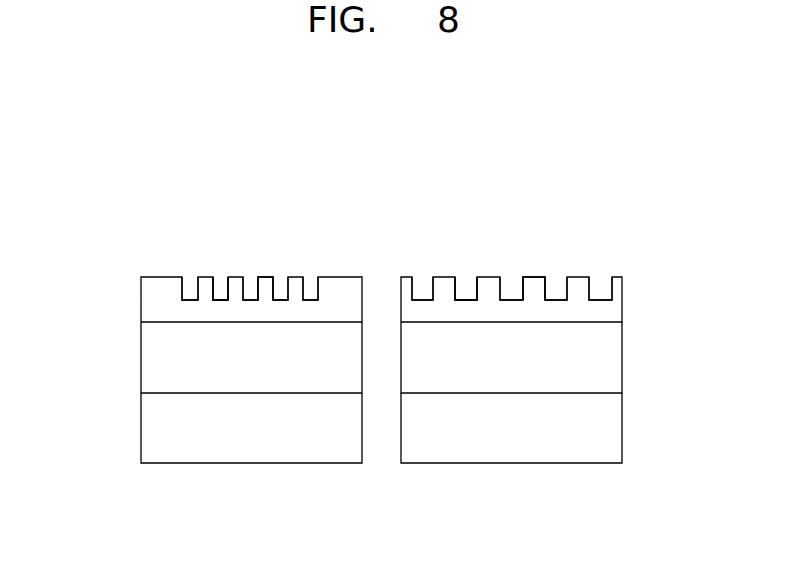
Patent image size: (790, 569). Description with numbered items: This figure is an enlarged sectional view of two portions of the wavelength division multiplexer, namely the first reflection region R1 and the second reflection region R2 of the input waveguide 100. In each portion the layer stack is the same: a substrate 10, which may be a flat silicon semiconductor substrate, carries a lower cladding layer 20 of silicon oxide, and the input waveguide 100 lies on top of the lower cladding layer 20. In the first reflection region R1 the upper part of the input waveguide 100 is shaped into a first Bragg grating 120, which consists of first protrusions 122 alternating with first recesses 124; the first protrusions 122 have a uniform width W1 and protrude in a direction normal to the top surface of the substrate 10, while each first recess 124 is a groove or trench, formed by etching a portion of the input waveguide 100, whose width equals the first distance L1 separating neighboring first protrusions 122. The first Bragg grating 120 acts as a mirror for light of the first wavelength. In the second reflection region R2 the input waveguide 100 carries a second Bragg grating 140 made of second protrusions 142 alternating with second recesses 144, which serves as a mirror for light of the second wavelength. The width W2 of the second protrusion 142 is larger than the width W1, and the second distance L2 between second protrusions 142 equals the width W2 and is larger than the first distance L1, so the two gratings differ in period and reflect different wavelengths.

The substrate 10 is at (150, 430).
The lower cladding layer 20 is at (150, 362).
The input waveguide 100 is at (150, 298).
The first Bragg grating 120 is at (300, 195).
The first protrusion 122 is at (267, 277).
The first recess 124 is at (220, 272).
The second Bragg grating 140 is at (560, 195).
The second protrusion 142 is at (530, 277).
The second recess 144 is at (465, 272).
The first distance L1 is at (213, 300).
The width of the first protrusion W1 is at (288, 300).
The second distance L2 is at (456, 300).
The width of the second protrusion W2 is at (523, 300).
The first reflection region R1 is at (362, 475).
The second reflection region R2 is at (622, 475).